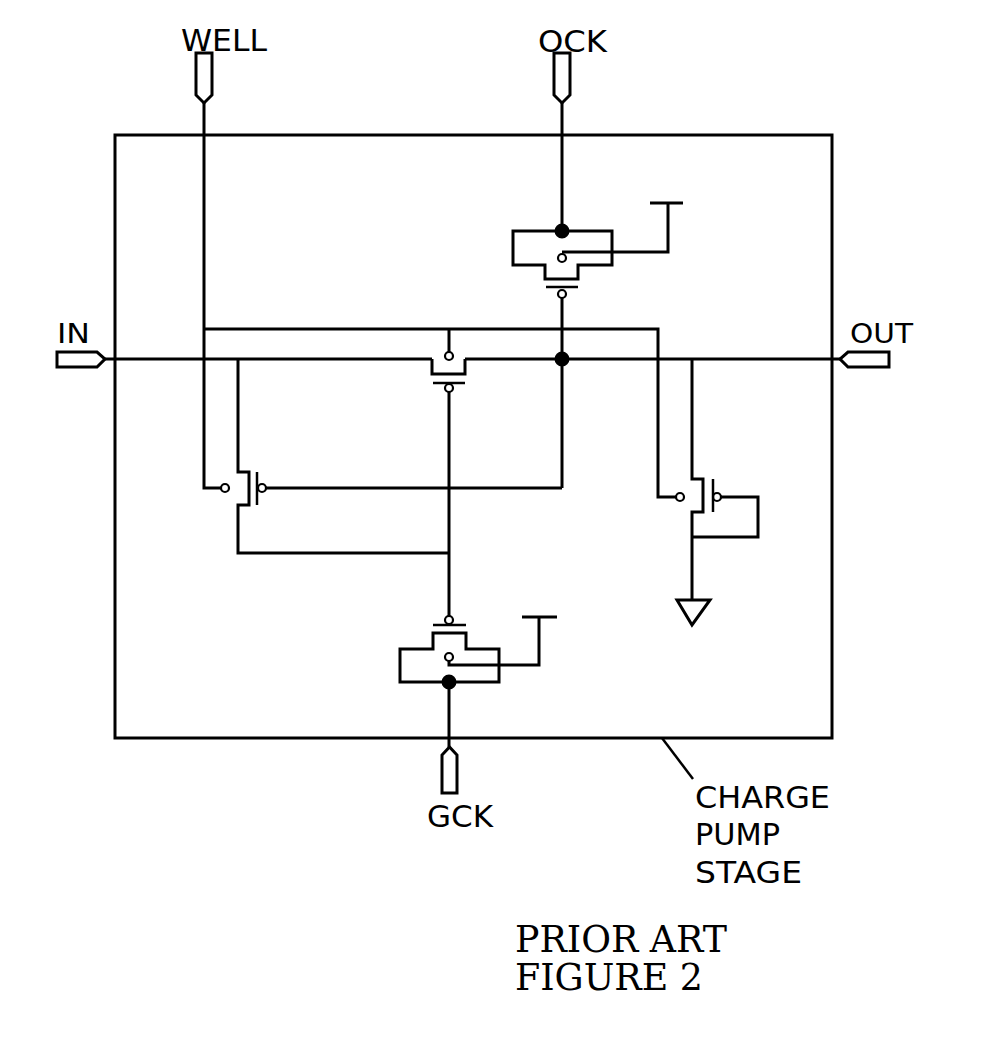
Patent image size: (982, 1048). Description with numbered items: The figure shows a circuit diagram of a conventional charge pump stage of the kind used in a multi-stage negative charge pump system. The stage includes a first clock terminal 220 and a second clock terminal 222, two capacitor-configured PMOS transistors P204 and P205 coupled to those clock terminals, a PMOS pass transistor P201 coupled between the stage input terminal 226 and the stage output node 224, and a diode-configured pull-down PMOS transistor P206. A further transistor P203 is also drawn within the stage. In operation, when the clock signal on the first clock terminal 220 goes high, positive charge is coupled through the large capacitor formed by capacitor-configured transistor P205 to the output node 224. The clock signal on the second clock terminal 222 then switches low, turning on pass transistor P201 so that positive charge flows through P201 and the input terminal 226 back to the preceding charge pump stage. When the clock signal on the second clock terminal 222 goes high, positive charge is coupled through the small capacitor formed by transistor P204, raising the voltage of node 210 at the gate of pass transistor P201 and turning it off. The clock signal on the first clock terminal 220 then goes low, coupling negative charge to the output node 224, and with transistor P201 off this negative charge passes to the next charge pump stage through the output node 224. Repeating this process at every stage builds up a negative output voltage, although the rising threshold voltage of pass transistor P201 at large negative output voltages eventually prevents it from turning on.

The clock terminal OCK 220 is at (560, 197).
The IN 226 is at (178, 356).
The OUT 224 is at (745, 357).
The node 210 is at (452, 585).
The clock terminal GCK 222 is at (452, 722).
The PMOS pass transistor P201 is at (430, 369).
The transistor P203 is at (247, 472).
The capacitor configured PMOS transistor P204 is at (432, 640).
The capacitor configured PMOS transistor P205 is at (582, 270).
The diode configured pull-down PMOS transistor P206 is at (703, 475).